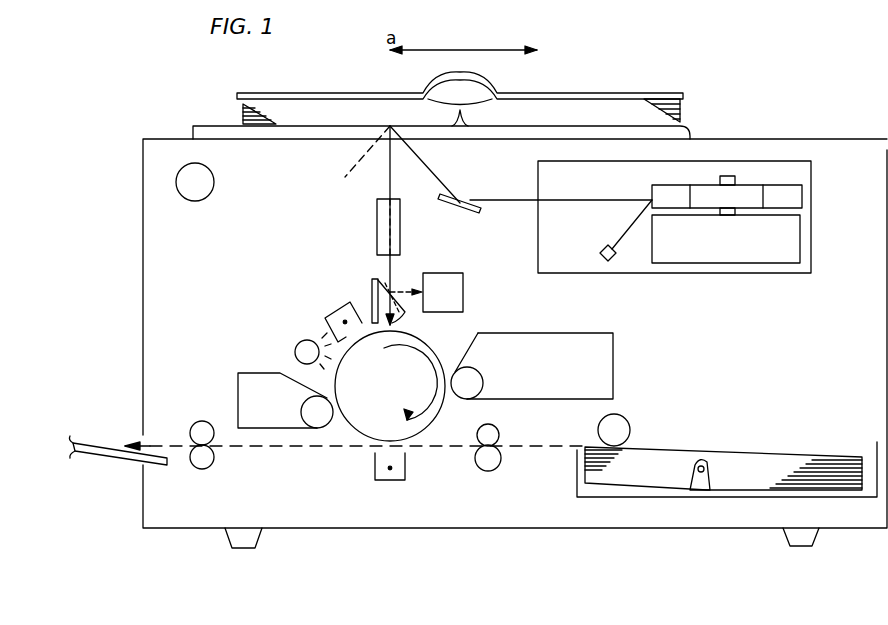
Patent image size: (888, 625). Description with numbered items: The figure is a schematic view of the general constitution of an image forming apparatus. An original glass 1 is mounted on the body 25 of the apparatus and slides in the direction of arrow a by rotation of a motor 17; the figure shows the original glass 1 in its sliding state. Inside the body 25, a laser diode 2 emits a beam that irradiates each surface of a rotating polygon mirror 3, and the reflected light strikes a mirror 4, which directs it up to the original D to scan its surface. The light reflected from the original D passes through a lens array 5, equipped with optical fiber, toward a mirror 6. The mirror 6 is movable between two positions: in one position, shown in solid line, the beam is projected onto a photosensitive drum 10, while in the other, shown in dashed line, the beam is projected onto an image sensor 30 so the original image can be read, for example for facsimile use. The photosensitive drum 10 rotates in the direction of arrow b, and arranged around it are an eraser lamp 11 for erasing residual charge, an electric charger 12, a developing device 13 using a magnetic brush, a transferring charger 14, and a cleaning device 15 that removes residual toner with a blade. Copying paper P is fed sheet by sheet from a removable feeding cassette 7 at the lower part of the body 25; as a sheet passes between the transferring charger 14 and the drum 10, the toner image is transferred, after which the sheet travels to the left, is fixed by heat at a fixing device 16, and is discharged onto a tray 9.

The original glass 1 is at (690, 122).
The laser diode 2 is at (604, 246).
The polygon mirror 3 is at (797, 197).
The mirror 4 is at (459, 206).
The lens array 5 is at (377, 228).
The mirror 6 is at (372, 285).
The feeding cassette 7 is at (630, 497).
The tray 9 is at (98, 443).
The photosensitive drum 10 is at (431, 427).
The eraser lamp 11 is at (296, 346).
The electric charger 12 is at (330, 312).
The developing device 13 is at (539, 333).
The transferring charger 14 is at (378, 480).
The cleaning device 15 is at (238, 398).
The fixing device 16 is at (202, 469).
The motor 17 is at (208, 181).
The body of the apparatus 25 is at (143, 268).
The image sensor 30 is at (465, 284).
The original D is at (620, 105).
The copying paper P is at (670, 452).